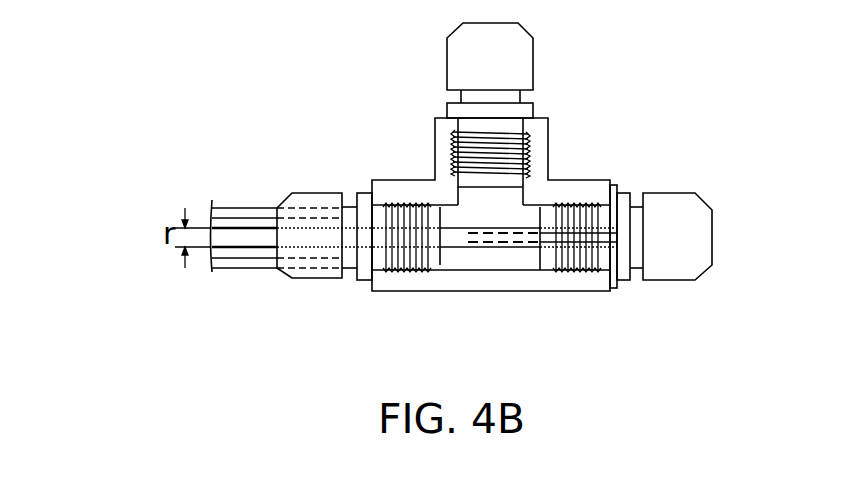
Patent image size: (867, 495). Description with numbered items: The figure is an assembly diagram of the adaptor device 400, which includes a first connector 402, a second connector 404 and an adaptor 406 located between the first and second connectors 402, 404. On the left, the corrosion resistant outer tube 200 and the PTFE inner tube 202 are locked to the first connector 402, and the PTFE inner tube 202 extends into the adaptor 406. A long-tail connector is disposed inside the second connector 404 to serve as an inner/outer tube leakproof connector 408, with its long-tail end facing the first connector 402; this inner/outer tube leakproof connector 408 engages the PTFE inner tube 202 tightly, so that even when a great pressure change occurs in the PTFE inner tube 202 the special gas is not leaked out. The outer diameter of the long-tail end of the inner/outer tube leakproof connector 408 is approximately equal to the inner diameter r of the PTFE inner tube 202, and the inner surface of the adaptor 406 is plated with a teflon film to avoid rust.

The corrosion resistant outer tube 200 is at (243, 205).
The PTFE inner tube 202 is at (452, 248).
The adaptor device 400 is at (402, 124).
The first connector 402 is at (316, 193).
The second connector 404 is at (672, 193).
The adaptor 406 is at (543, 292).
The inner/outer tube leakproof connector 408 is at (477, 249).